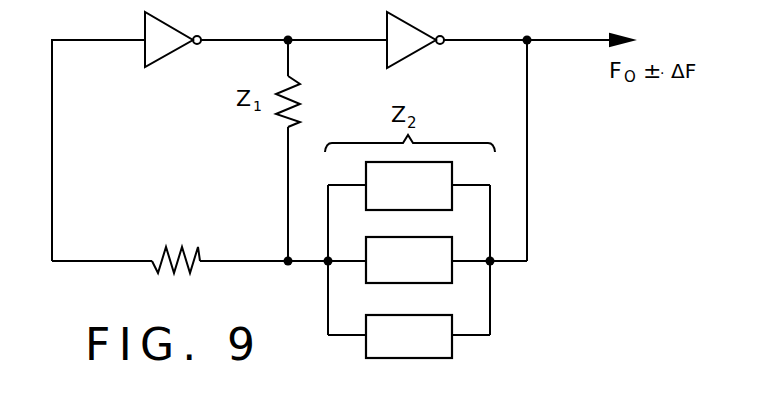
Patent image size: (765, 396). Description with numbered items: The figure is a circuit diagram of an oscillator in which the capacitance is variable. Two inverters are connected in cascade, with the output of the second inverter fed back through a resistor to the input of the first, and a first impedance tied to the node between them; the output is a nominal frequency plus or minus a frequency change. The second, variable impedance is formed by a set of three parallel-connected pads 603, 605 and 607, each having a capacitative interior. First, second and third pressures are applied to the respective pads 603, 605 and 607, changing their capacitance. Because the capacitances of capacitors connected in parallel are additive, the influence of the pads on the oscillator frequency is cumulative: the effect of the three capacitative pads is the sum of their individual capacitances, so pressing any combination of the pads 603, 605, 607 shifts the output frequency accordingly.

The pad 603 is at (452, 176).
The pad 605 is at (452, 274).
The pad 607 is at (452, 350).